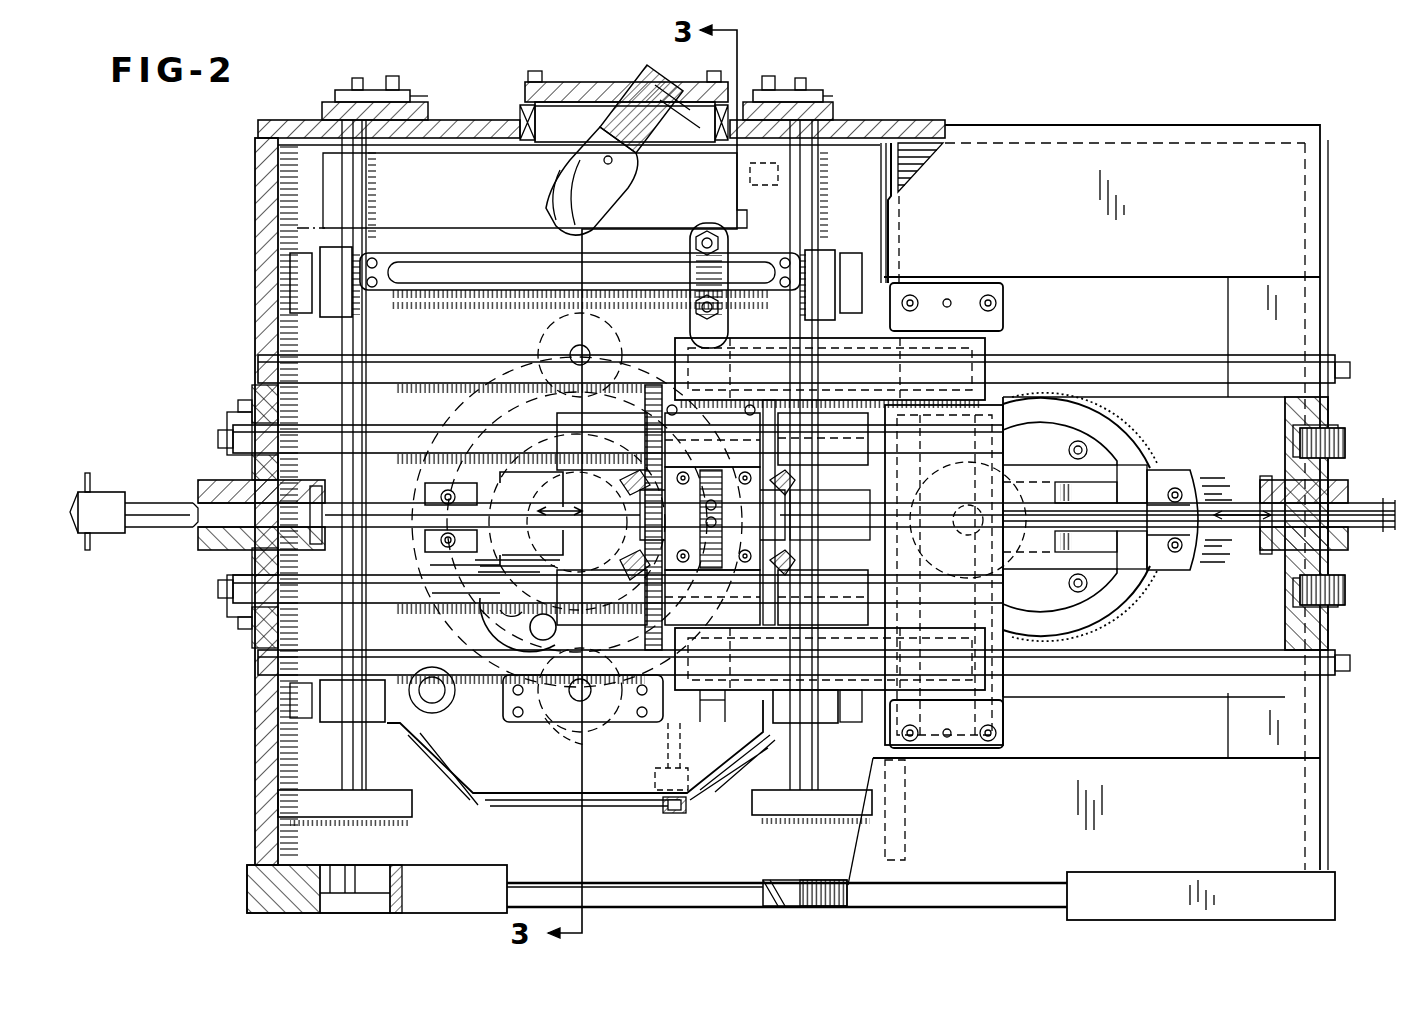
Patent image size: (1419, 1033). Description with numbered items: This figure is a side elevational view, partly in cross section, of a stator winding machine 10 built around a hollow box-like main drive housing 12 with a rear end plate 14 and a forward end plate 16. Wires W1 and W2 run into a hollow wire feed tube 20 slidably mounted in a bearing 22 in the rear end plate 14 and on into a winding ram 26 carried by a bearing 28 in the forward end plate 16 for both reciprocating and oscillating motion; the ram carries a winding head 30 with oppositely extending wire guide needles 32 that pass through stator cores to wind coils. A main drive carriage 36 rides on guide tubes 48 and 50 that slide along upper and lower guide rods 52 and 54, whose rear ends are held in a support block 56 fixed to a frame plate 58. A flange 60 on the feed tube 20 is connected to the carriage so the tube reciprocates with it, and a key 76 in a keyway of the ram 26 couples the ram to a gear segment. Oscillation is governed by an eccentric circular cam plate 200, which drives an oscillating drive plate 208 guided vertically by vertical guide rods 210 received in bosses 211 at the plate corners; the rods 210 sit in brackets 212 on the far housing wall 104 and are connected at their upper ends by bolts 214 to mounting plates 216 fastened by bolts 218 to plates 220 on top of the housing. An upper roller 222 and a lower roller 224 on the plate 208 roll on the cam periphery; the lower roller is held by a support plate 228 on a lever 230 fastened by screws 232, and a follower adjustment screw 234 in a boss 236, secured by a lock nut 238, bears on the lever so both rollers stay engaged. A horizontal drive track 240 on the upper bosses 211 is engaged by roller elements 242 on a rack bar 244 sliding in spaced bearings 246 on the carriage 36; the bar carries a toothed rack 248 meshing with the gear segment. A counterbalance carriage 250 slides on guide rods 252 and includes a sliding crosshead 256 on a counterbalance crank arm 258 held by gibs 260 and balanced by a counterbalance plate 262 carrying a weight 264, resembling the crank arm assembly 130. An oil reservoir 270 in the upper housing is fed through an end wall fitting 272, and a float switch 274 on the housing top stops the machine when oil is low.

The stator winding machine 10 is at (925, 125).
The main drive housing 12 is at (477, 121).
The rear end plate 14 is at (1325, 410).
The forward end plate 16 is at (262, 395).
The wire feed tube 20 is at (846, 504).
The bearing 22 is at (1340, 480).
The winding ram 26 is at (190, 528).
The bearing 28 is at (214, 492).
The winding head 30 is at (108, 492).
The wire guide needles 32 is at (70, 512).
The main drive carriage 36 is at (745, 605).
The guide tube 48 is at (840, 413).
The guide tube 50 is at (858, 628).
The upper guide rod 52 is at (316, 432).
The lower guide rod 54 is at (328, 590).
The support block 56 is at (908, 615).
The frame plate 58 is at (1003, 312).
The flange 60 is at (800, 545).
The key 76 is at (660, 525).
The far housing wall 104 is at (290, 178).
The crank arm assembly 130 is at (452, 612).
The cam plate 200 is at (456, 418).
The oscillating drive plate 208 is at (500, 794).
The vertical guide rods 210 is at (366, 180).
The bosses 211 is at (322, 266).
The brackets 212 is at (330, 817).
The bolts 214 is at (357, 78).
The mounting plates 216 is at (414, 100).
The bolts 218 is at (392, 76).
The plates 220 is at (322, 106).
The upper roller 222 is at (545, 335).
The lower roller 224 is at (556, 736).
The support plate 228 is at (610, 722).
The lever 230 is at (520, 732).
The screws 232 is at (434, 705).
The follower adjustment screw 234 is at (672, 815).
The boss 236 is at (653, 778).
The lock nut 238 is at (688, 808).
The oscillating drive track 240 is at (500, 262).
The roller elements 242 is at (707, 229).
The rack bar 244 is at (690, 300).
The bearings 246 is at (720, 400).
The toothed rack 248 is at (728, 448).
The counterbalance carriage 250 is at (880, 338).
The guide rods 252 is at (320, 365).
The sliding crosshead 256 is at (960, 470).
The counterbalance crank arm 258 is at (1030, 480).
The gibs 260 is at (1118, 450).
The counterbalance plate 262 is at (1190, 470).
The weight 264 is at (1195, 545).
The oil reservoir 270 is at (297, 228).
The end wall fitting 272 is at (760, 186).
The float switch 274 is at (548, 192).
The wire W1 is at (87, 478).
The wire W2 is at (87, 545).